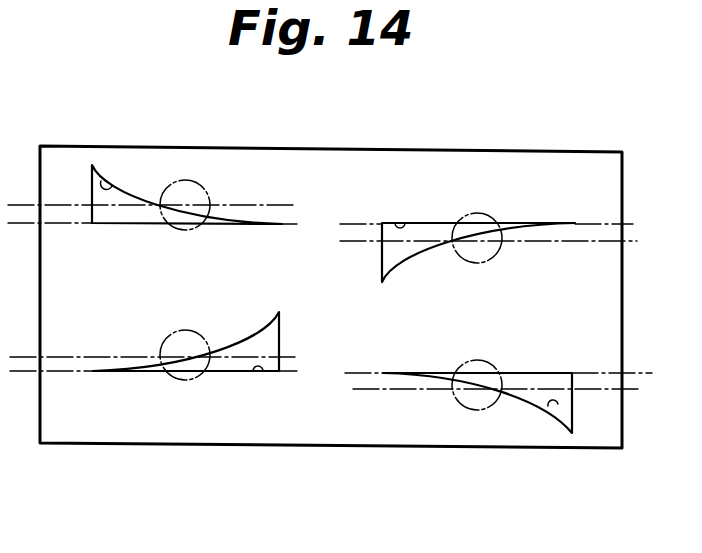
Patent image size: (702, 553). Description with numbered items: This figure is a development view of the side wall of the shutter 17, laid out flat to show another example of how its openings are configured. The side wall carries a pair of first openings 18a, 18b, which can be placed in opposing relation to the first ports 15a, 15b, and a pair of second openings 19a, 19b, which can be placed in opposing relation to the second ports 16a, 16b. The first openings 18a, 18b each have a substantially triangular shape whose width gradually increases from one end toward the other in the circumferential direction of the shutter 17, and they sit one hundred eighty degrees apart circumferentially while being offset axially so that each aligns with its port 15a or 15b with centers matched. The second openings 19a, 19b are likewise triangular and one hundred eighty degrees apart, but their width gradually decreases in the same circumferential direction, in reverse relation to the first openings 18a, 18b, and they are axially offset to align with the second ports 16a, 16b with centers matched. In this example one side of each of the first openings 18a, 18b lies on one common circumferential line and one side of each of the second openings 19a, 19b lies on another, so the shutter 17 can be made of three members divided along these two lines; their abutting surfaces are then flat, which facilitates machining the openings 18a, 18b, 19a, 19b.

The shutter 17 is at (583, 178).
The first opening 18a is at (103, 180).
The first opening 18b is at (397, 222).
The first port 15a is at (202, 183).
The first port 15b is at (492, 212).
The second port 16a is at (175, 382).
The second port 16b is at (468, 410).
The second opening 19a is at (268, 380).
The second opening 19b is at (558, 420).